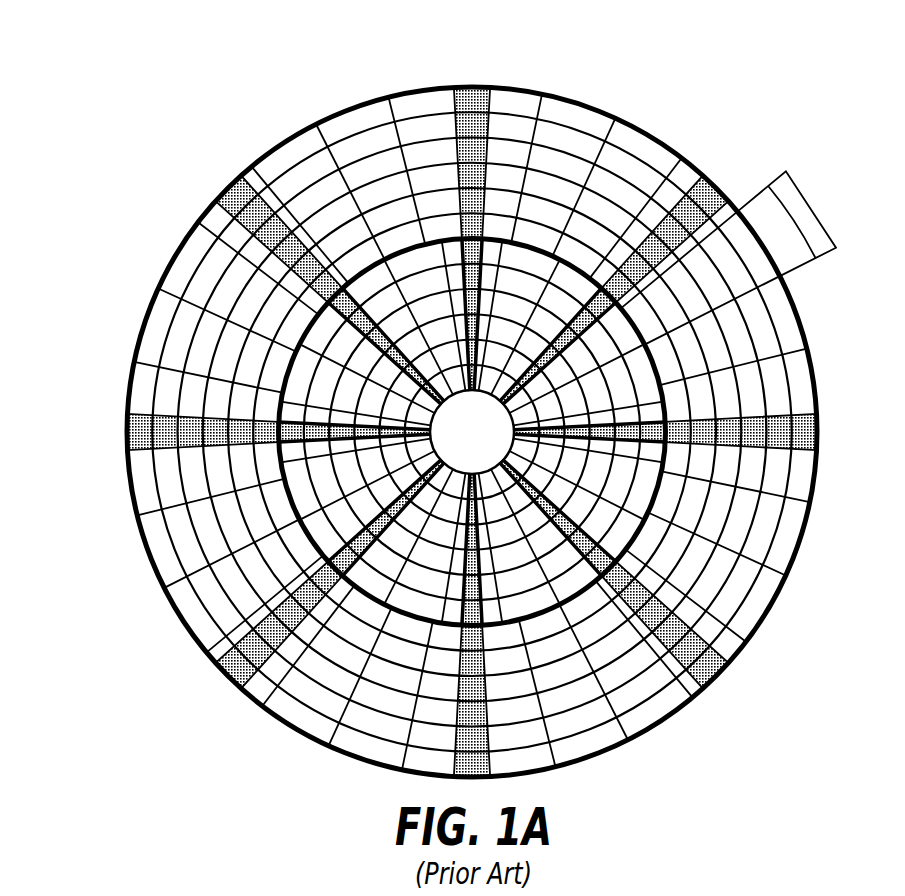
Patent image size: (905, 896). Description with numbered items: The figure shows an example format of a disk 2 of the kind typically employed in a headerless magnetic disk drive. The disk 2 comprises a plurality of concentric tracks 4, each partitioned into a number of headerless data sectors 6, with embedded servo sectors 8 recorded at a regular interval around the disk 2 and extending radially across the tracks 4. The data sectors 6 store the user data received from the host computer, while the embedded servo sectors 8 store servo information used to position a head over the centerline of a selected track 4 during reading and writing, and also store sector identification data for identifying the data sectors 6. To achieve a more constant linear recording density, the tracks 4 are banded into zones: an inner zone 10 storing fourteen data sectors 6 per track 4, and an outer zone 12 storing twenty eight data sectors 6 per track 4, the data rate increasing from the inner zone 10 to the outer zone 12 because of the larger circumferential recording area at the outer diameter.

The disk 2 is at (213, 84).
The track 4 is at (797, 540).
The data sector 6 is at (806, 222).
The embedded servo sector 8 is at (490, 112).
The inner zone 10 is at (337, 481).
The outer zone 12 is at (218, 289).